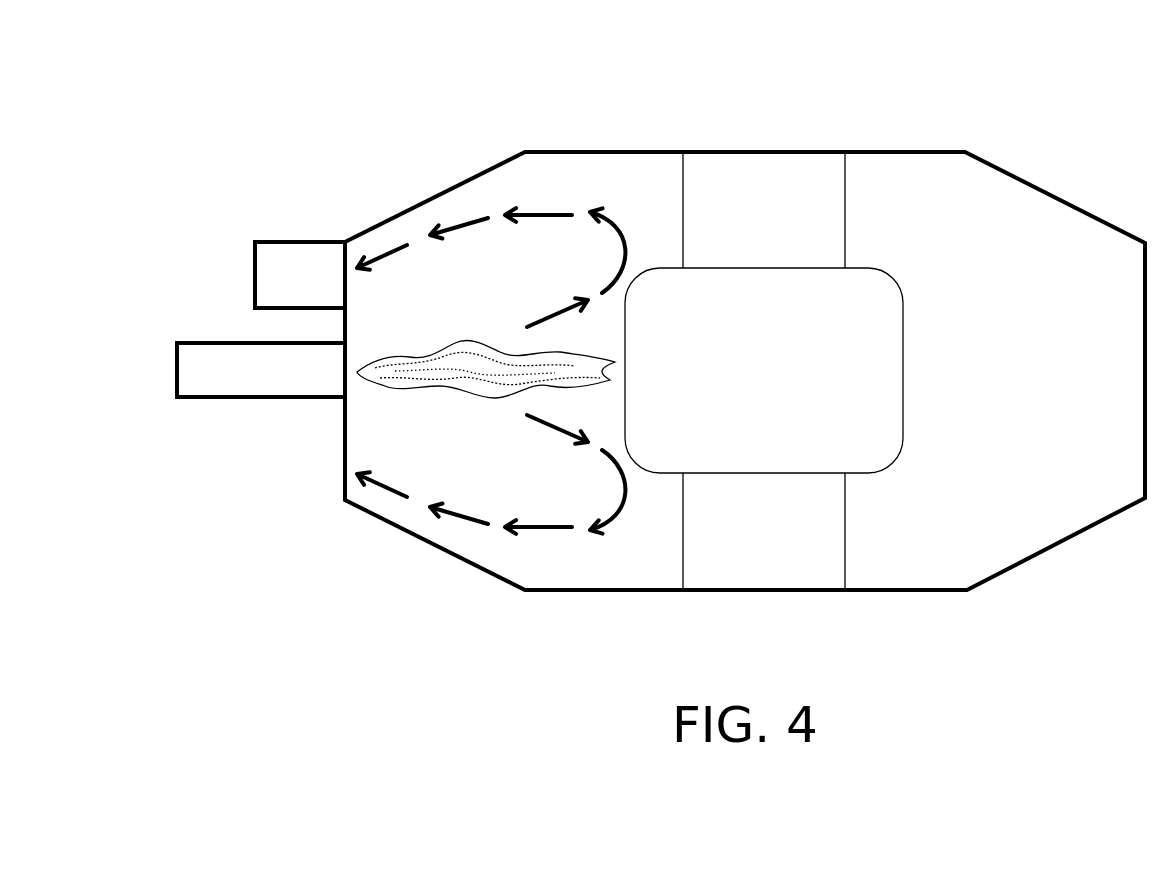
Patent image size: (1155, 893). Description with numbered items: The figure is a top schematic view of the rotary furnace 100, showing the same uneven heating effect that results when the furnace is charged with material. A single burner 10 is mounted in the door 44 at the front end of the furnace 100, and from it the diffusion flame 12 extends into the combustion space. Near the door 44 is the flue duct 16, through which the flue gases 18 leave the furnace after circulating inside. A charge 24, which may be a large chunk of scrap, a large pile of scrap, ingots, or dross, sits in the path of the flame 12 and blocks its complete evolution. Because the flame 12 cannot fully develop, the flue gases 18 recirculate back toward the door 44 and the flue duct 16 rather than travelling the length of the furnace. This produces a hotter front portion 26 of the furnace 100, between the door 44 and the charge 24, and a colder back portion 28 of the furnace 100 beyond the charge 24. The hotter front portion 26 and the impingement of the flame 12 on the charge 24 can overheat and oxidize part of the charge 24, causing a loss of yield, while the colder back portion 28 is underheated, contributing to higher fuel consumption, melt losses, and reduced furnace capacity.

The rotary furnace 100 is at (964, 129).
The flue duct 16 is at (300, 275).
The burner 10 is at (261, 370).
The flue gases 18 is at (405, 247).
The hotter front portion 26 is at (491, 474).
The diffusion flame 12 is at (438, 351).
The charge 24 is at (764, 370).
The colder back portion 28 is at (929, 371).
The door 44 is at (343, 490).